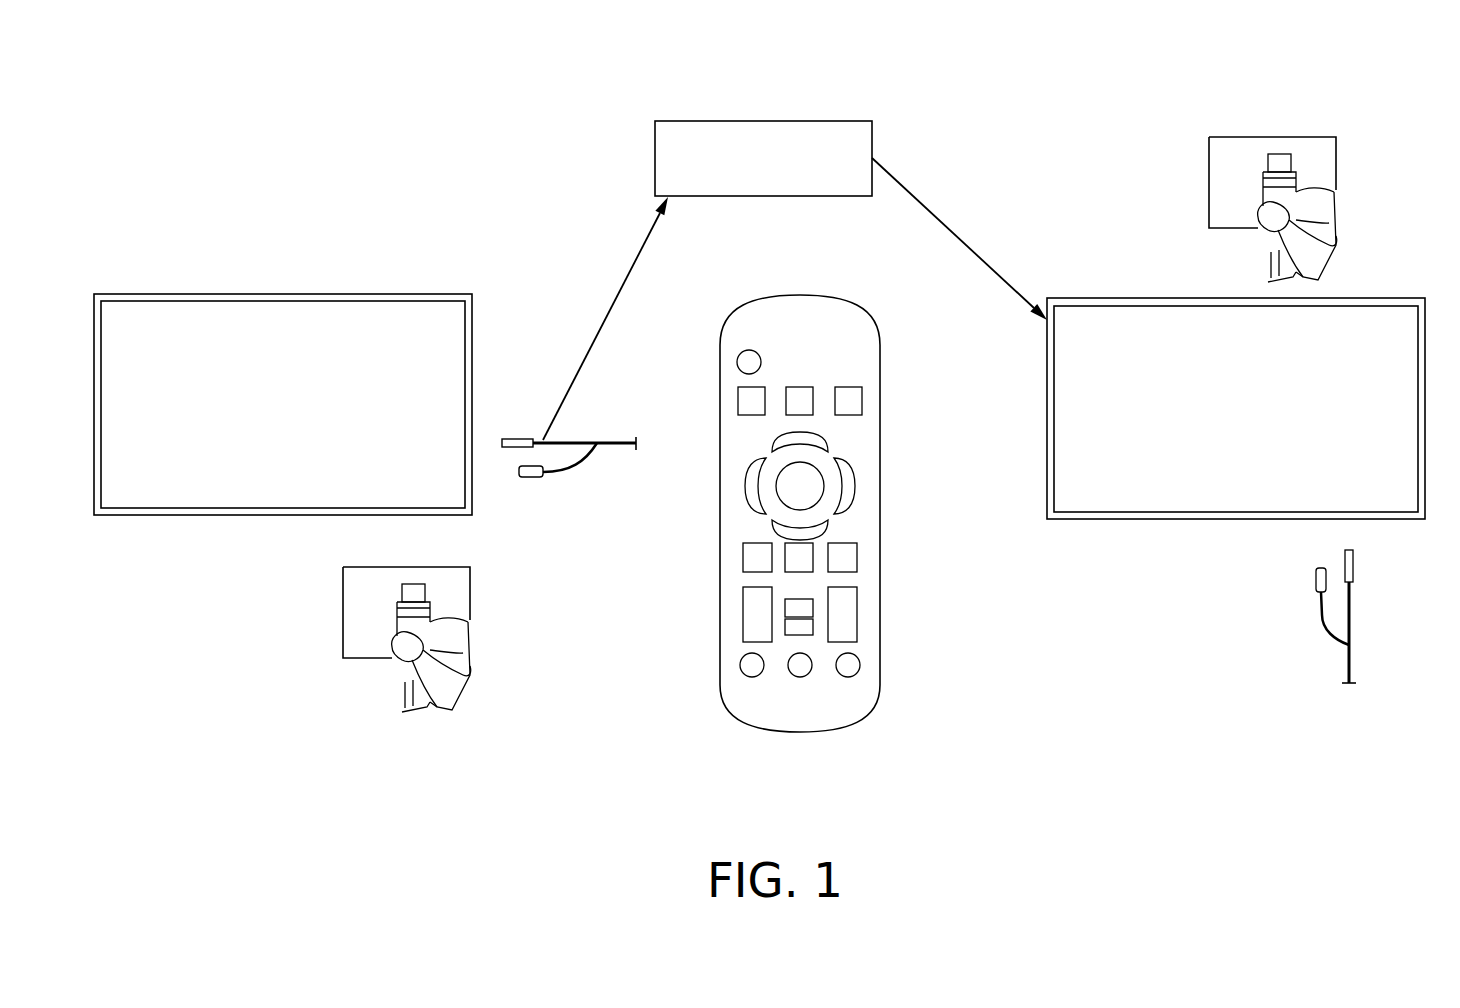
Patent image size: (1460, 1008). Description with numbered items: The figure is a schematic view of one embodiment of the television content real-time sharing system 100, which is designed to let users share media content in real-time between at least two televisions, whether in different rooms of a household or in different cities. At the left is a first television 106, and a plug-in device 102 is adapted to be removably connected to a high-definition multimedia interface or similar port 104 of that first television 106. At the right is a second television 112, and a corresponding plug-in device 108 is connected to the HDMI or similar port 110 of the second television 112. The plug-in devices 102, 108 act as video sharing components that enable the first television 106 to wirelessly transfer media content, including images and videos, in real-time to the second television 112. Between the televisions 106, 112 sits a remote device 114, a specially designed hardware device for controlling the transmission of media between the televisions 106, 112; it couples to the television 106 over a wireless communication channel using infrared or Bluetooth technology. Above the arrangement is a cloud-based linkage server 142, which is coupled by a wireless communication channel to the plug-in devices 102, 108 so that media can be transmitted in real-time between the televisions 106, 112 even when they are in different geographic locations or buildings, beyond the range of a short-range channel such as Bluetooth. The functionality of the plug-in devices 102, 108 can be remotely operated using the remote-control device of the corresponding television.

The television content real-time sharing system 100 is at (312, 132).
The plug-in device 102 is at (597, 443).
The HDMI port 104 is at (430, 558).
The first television 106 is at (445, 319).
The corresponding plug-in device 108 is at (1322, 618).
The HDMI port 110 is at (1298, 151).
The second television 112 is at (1075, 393).
The remote device 114 is at (828, 332).
The cloud-based linkage server 142 is at (703, 148).